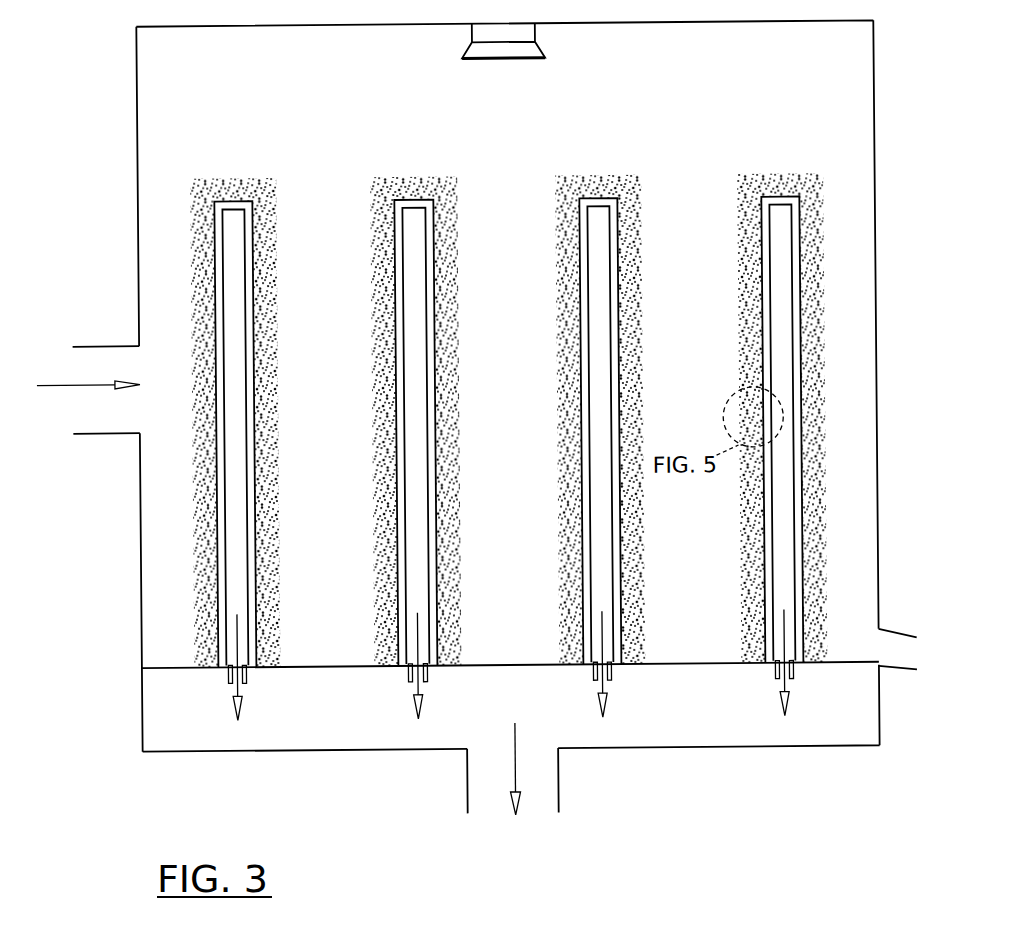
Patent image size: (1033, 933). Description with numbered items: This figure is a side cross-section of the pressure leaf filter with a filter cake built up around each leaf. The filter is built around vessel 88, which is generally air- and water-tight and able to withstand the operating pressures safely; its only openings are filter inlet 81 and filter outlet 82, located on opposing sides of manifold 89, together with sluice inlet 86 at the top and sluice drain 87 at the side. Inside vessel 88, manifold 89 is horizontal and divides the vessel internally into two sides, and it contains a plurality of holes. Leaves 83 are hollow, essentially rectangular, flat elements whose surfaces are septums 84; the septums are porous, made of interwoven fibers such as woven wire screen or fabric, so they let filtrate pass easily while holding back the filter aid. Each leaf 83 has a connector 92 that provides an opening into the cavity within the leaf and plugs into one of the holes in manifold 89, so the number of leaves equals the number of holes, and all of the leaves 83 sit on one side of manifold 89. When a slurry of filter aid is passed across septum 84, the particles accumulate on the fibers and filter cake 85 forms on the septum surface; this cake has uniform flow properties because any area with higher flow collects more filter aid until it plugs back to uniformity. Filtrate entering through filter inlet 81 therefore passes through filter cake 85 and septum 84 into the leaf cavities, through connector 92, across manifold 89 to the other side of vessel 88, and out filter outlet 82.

The filter inlet 81 is at (78, 348).
The filter outlet 82 is at (544, 808).
The leaf 83 is at (289, 173).
The septum 84 is at (484, 377).
The filter cake 85 is at (219, 198).
The sluice inlet 86 is at (522, 60).
The sluice drain 87 is at (916, 641).
The vessel 88 is at (139, 115).
The manifold 89 is at (346, 661).
The connector 92 is at (405, 672).